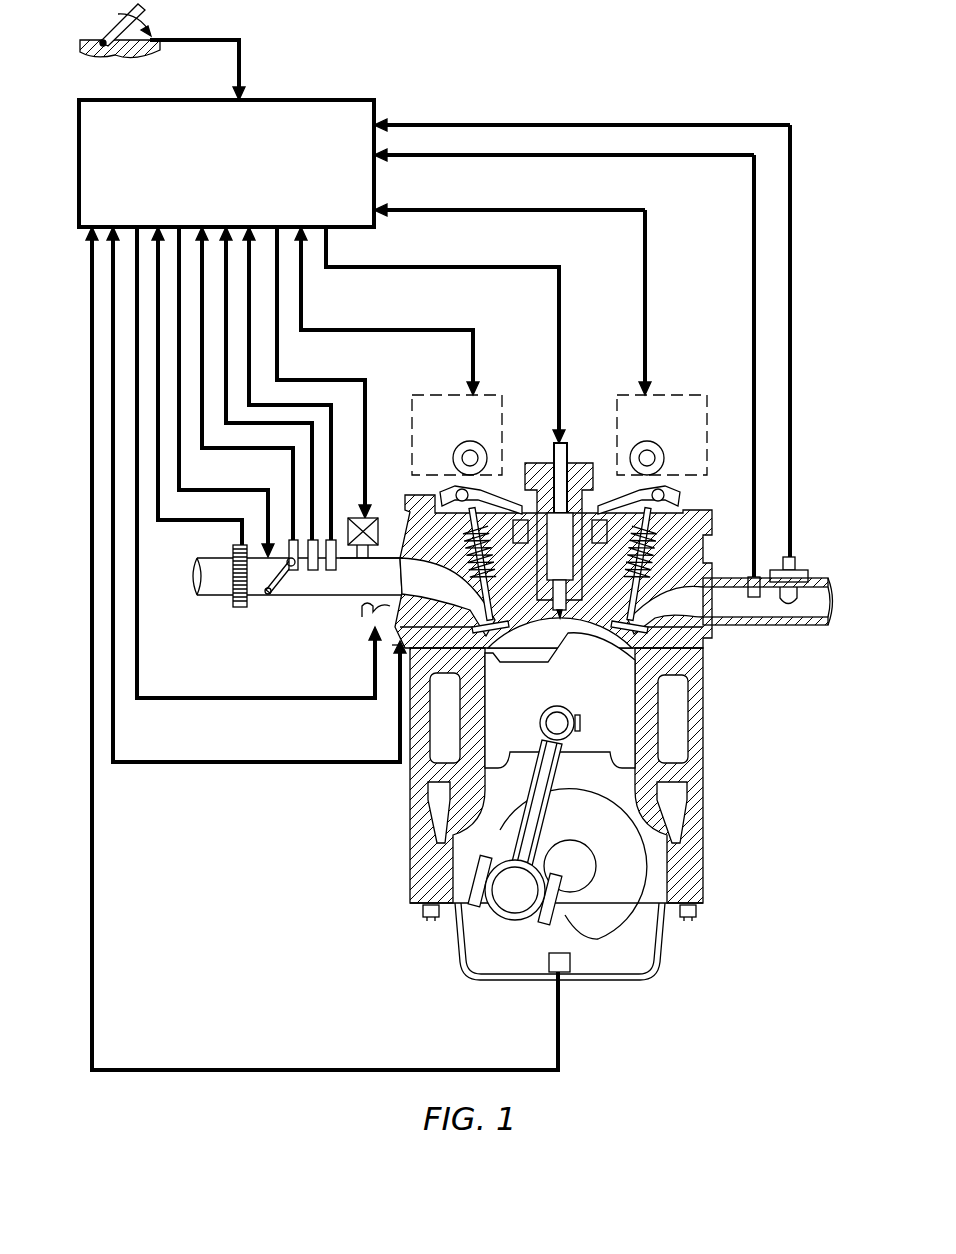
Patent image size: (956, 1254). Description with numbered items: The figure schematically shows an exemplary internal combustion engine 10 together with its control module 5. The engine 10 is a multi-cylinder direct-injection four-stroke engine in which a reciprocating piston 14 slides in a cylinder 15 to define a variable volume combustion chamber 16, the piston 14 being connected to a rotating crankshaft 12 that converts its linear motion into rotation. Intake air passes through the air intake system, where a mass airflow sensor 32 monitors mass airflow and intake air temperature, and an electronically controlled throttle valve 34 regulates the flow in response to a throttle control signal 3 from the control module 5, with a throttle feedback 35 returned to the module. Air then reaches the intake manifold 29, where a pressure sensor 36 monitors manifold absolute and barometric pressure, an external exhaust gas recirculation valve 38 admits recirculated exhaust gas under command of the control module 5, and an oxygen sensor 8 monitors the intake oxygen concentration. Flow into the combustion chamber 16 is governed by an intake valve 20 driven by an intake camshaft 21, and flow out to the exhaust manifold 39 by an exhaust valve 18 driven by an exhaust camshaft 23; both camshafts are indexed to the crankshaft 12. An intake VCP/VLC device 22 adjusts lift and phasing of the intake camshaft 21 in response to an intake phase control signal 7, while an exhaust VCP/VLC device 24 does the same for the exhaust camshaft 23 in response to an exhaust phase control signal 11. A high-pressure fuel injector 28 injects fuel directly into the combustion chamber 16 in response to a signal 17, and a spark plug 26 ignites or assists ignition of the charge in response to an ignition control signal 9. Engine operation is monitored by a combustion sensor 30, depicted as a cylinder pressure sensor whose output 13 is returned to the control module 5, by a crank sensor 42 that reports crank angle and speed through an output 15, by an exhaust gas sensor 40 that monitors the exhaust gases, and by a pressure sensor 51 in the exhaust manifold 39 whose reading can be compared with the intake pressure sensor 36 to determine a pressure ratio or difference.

The throttle control signal 3 is at (193, 485).
The control module 5 is at (230, 197).
The intake phase control signal 7 is at (405, 324).
The oxygen sensor 8 is at (330, 572).
The ignition control signal 9 is at (478, 262).
The internal combustion engine 10 is at (706, 768).
The exhaust phase control signal 11 is at (564, 207).
The crankshaft 12 is at (613, 918).
The combustion sensor signal 13 is at (188, 757).
The piston 14 is at (593, 737).
The cylinder 15 is at (240, 1064).
The combustion chamber 16 is at (510, 649).
The fuel injector signal 17 is at (172, 692).
The exhaust valve 18 is at (633, 616).
The intake valve 20 is at (476, 598).
The intake camshaft 21 is at (471, 458).
The intake VCP/VLC device 22 is at (425, 425).
The exhaust camshaft 23 is at (649, 460).
The exhaust VCP/VLC device 24 is at (671, 425).
The spark plug 26 is at (567, 445).
The fuel injector 28 is at (372, 620).
The intake manifold 29 is at (388, 568).
The combustion sensor 30 is at (392, 650).
The mass airflow sensor 32 is at (240, 601).
The throttle valve 34 is at (270, 592).
The throttle valve position signal 35 is at (292, 572).
The pressure sensor 36 is at (312, 572).
The external exhaust gas recirculation valve 38 is at (352, 550).
The exhaust manifold 39 is at (720, 578).
The exhaust gas sensor 40 is at (796, 558).
The crank sensor 42 is at (556, 969).
The pressure sensor 51 is at (760, 598).